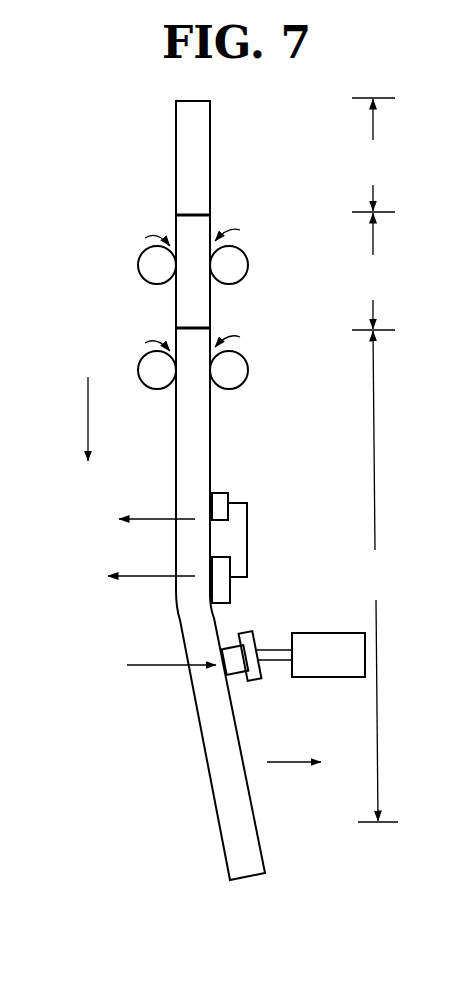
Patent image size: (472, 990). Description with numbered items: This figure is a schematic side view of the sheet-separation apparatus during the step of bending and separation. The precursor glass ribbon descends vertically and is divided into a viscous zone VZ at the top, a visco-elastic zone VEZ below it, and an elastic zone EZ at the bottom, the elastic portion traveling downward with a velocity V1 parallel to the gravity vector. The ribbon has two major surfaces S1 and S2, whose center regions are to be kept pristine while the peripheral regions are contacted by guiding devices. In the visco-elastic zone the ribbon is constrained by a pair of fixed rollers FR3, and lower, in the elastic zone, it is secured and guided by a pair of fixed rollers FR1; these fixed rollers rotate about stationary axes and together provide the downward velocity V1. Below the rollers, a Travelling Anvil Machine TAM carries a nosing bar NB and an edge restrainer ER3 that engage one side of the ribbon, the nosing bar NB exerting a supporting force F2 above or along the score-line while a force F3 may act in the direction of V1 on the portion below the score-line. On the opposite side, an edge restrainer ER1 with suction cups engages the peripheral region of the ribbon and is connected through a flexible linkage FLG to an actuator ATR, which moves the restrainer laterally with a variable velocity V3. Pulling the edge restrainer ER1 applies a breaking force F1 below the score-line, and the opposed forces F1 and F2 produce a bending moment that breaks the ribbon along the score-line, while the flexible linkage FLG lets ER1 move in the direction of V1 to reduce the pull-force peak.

The major surface S1 is at (172, 469).
The major surface S2 is at (216, 470).
The fixed rollers FR3 is at (141, 255).
The fixed rollers FR1 is at (141, 370).
The velocity V1 is at (103, 419).
The Travelling Anvil Machine TAM is at (256, 538).
The edge restrainer ER3 is at (233, 497).
The nosing bar NB is at (224, 598).
The maximal force F3 is at (143, 520).
The supporting force F2 is at (138, 576).
The breaking force F1 is at (171, 652).
The edge restrainer ER1 is at (221, 671).
The flexible linkage FLG is at (261, 678).
The actuator ATR is at (311, 655).
The lateral velocity V3 is at (294, 749).
The viscous zone VZ is at (373, 155).
The visco-elastic zone VEZ is at (373, 271).
The elastic zone EZ is at (378, 576).